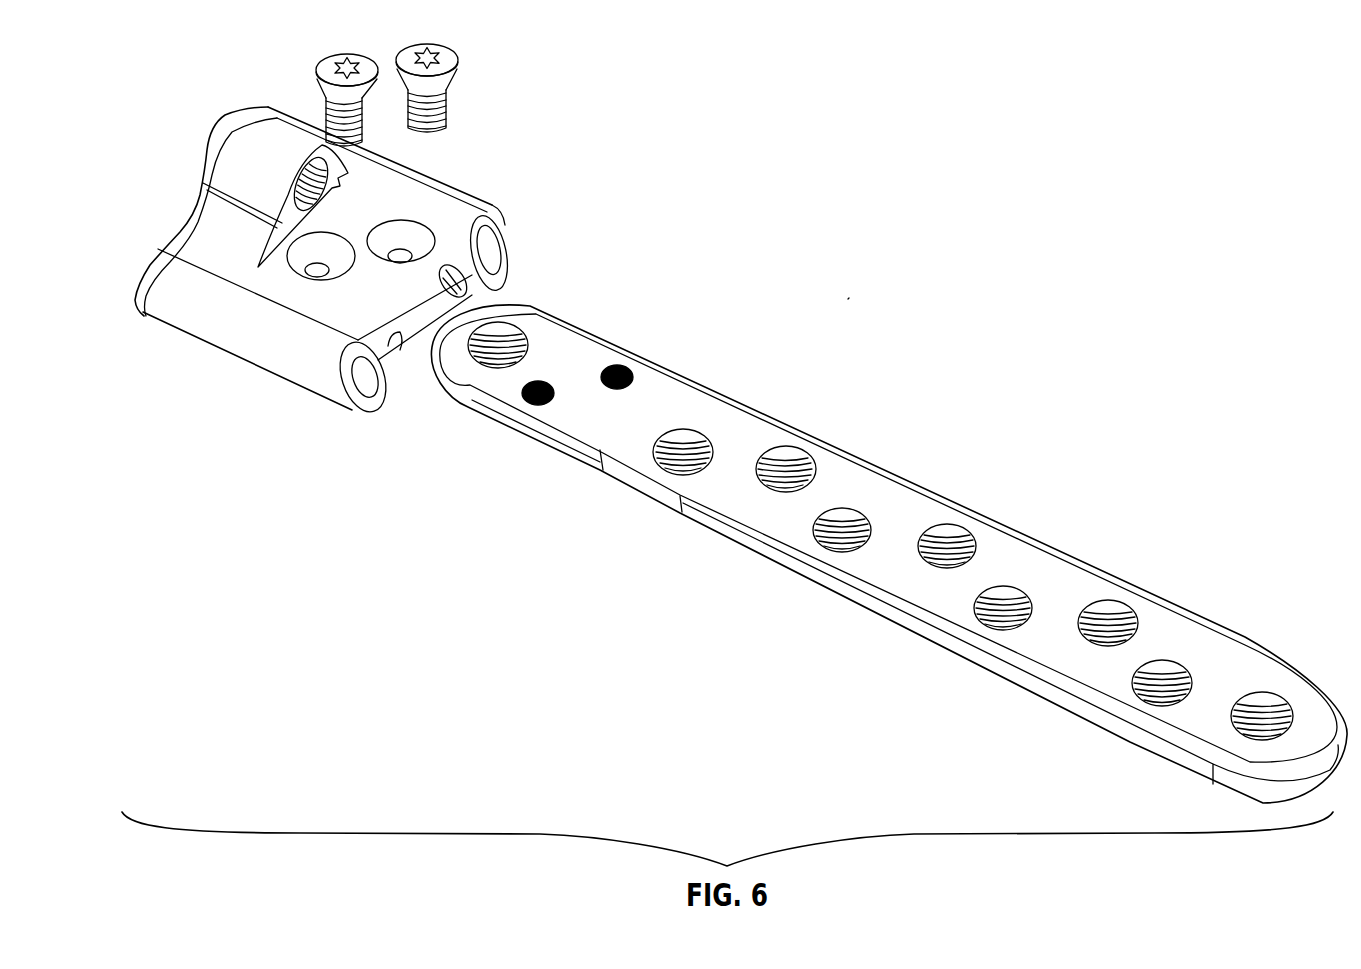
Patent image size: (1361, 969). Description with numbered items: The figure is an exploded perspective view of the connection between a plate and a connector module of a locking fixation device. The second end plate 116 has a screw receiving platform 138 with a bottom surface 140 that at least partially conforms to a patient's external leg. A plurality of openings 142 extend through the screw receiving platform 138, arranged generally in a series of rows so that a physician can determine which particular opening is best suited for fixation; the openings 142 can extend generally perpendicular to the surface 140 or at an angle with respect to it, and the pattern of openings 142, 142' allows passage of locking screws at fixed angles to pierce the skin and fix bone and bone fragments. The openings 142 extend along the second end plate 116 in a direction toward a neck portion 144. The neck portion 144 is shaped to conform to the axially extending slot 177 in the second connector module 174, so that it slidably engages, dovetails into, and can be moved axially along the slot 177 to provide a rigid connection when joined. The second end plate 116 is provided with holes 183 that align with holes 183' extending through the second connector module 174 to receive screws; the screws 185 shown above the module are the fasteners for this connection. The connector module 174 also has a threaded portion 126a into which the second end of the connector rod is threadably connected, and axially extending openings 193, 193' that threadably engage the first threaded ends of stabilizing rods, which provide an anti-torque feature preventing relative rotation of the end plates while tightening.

The second end plate 116 is at (850, 295).
The threaded portion 126a is at (268, 108).
The screw receiving platform 138 is at (1057, 570).
The bottom surface 140 is at (698, 535).
The openings 142 is at (1116, 590).
The openings 142' is at (1038, 647).
The neck portion 144 is at (527, 432).
The second connector module 174 is at (198, 352).
The slot 177 is at (402, 335).
The holes 183 is at (594, 353).
The holes 183' is at (389, 201).
The screws 185 is at (426, 46).
The axially extending opening 193 is at (354, 406).
The axially extending opening 193' is at (520, 252).